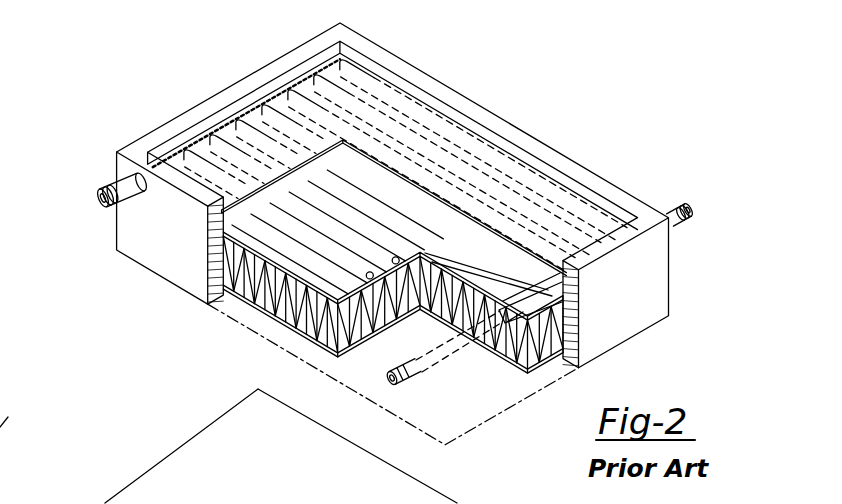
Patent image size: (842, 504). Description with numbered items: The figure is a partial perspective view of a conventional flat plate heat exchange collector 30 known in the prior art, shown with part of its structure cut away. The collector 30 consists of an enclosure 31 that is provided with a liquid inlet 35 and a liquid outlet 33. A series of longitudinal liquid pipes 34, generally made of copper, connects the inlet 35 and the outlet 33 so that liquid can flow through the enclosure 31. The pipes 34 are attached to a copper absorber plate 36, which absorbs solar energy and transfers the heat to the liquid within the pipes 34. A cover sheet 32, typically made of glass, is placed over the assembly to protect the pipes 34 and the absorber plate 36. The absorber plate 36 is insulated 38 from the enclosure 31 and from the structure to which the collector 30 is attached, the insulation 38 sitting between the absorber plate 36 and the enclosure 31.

The flat plate heat exchange collector 30 is at (540, 108).
The enclosure 31 is at (138, 251).
The cover sheet 32 is at (382, 90).
The liquid outlet 33 is at (100, 203).
The longitudinal liquid pipes 34 is at (356, 270).
The liquid inlet 35 is at (689, 206).
The absorber plate 36 is at (303, 269).
The insulation 38 is at (228, 298).